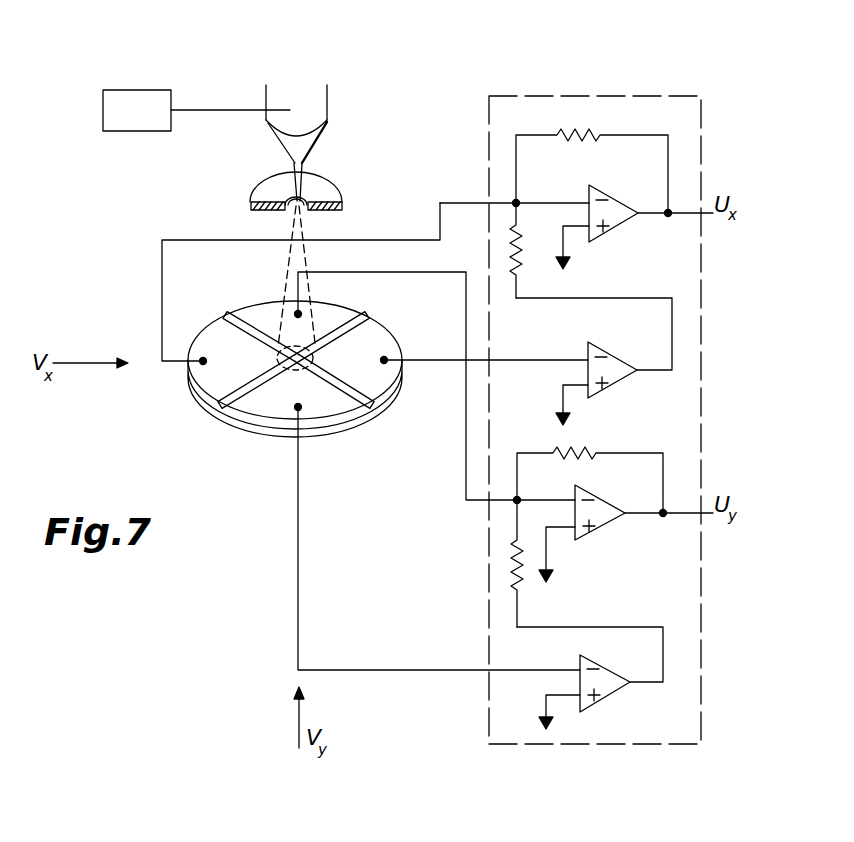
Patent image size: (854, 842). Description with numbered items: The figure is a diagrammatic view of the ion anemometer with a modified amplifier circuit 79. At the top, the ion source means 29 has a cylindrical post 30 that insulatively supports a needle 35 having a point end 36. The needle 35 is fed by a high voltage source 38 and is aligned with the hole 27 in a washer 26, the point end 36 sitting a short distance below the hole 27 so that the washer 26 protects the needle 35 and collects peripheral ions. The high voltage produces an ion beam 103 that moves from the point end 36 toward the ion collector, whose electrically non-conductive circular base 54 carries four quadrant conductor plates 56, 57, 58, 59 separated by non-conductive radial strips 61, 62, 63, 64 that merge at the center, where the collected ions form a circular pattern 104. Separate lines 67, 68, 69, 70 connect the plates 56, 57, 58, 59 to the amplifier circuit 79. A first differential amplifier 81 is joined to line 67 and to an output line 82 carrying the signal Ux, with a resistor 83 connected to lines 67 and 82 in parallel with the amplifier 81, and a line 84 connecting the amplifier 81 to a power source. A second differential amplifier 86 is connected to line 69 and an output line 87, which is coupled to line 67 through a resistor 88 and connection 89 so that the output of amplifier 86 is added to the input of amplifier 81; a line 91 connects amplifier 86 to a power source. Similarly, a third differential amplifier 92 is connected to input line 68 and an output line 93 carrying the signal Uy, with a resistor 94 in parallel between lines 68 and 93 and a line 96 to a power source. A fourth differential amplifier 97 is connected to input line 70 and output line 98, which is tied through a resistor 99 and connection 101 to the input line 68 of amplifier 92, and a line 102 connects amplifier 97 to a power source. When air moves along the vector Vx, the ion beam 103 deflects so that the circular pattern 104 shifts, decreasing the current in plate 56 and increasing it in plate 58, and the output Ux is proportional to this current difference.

The high voltage source 38 is at (121, 90).
The ion source means 29 is at (336, 110).
The cylindrical post 30 is at (268, 115).
The needle 35 is at (305, 163).
The washer 26 is at (266, 187).
The hole 27 is at (308, 196).
The point end 36 is at (290, 210).
The ion beam 103 is at (306, 226).
The circular pattern 104 is at (315, 357).
The quadrant conductor plate 57 is at (262, 306).
The circular base 54 is at (327, 433).
The radial strip 61 is at (230, 318).
The radial strip 62 is at (364, 322).
The radial strip 63 is at (372, 408).
The radial strip 64 is at (227, 408).
The quadrant conductor plate 56 is at (208, 378).
The quadrant conductor plate 58 is at (376, 333).
The quadrant conductor plate 59 is at (280, 413).
The line 67 is at (162, 283).
The line 68 is at (444, 272).
The line 69 is at (432, 361).
The line 70 is at (300, 585).
The amplifier circuit 79 is at (562, 92).
The connection 89 is at (518, 202).
The resistor 83 is at (595, 135).
The first differential amplifier 81 is at (612, 196).
The output line 82 is at (705, 214).
The resistor 88 is at (520, 244).
The line 84 is at (565, 258).
The output line 87 is at (651, 298).
The second differential amplifier 86 is at (608, 355).
The line 91 is at (562, 405).
The connection 101 is at (521, 500).
The resistor 94 is at (592, 452).
The third differential amplifier 92 is at (609, 499).
The output line 93 is at (707, 516).
The line 96 is at (553, 555).
The resistor 99 is at (522, 592).
The output line 98 is at (621, 627).
The fourth differential amplifier 97 is at (609, 665).
The line 102 is at (546, 713).